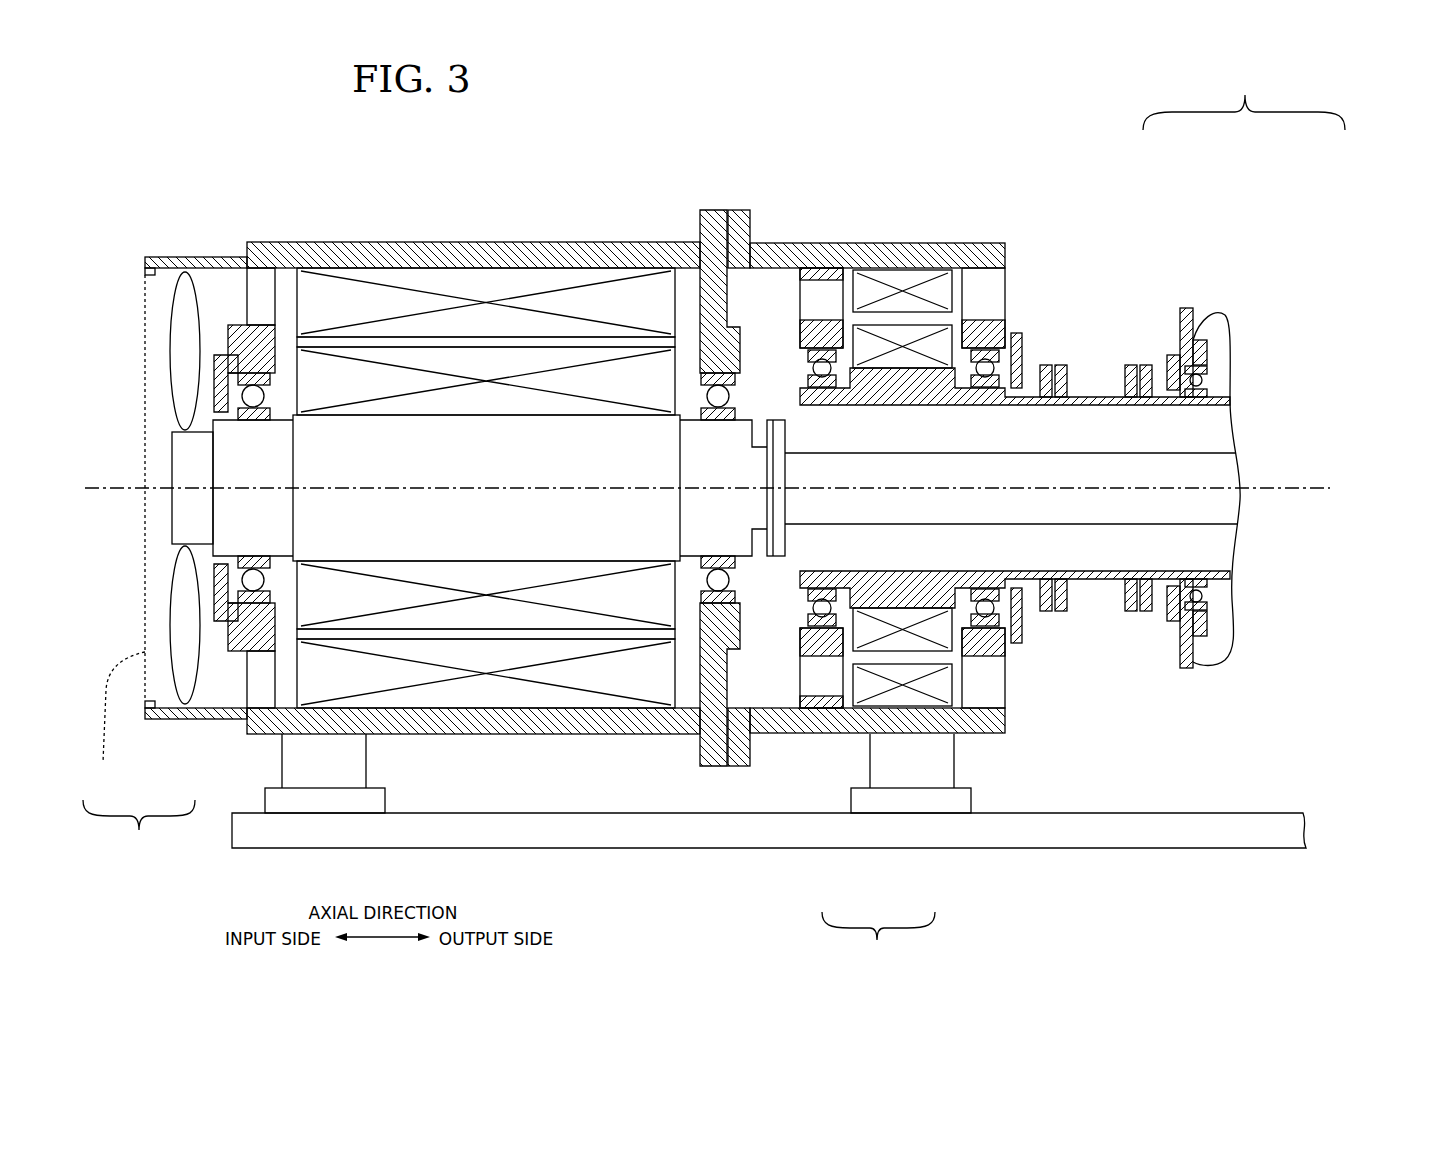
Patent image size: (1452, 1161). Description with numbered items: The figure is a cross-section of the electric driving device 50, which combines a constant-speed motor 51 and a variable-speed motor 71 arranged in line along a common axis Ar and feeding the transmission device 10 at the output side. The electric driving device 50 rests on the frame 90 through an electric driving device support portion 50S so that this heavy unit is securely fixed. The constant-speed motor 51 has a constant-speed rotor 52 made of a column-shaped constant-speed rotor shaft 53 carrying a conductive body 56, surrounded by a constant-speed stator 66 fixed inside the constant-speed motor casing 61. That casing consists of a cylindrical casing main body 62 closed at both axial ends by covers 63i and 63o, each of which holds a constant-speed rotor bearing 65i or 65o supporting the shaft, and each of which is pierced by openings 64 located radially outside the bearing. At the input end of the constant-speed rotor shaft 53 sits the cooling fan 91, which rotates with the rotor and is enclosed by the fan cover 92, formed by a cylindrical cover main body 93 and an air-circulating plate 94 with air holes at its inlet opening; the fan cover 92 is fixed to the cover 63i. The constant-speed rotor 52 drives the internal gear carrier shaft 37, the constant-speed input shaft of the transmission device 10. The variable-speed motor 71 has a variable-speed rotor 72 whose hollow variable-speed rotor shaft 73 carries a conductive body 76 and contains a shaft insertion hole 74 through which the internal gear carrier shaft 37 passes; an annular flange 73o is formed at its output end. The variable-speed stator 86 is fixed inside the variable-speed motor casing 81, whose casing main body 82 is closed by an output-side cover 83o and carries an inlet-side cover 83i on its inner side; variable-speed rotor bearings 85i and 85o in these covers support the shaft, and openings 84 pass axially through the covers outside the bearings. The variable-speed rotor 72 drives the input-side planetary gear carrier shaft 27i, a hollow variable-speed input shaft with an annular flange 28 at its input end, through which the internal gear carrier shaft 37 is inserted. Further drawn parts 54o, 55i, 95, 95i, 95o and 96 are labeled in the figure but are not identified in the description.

The transmission device 10 is at (1257, 617).
The input-side planetary gear carrier shaft 27i is at (1232, 358).
The annular flange 28 is at (1200, 312).
The internal gear carrier shaft 37 is at (1213, 513).
The electric driving device 50 is at (259, 230).
The electric driving device support portion 50S is at (310, 773).
The constant-speed motor 51 is at (276, 198).
The constant-speed rotor 52 is at (430, 640).
The constant-speed rotor shaft 53 is at (587, 536).
The output side rotor end plate 54o is at (782, 420).
The input side shaft portion 55i is at (771, 420).
The conductive body 56 is at (500, 607).
The constant-speed motor casing 61 is at (517, 233).
The casing main body 62 is at (562, 262).
The cover 63i is at (268, 262).
The cover 63o is at (710, 225).
The openings 64 is at (222, 290).
The constant-speed rotor bearing 65i is at (262, 396).
The constant-speed rotor bearing 65o is at (714, 392).
The constant-speed stator 66 is at (458, 287).
The variable-speed motor 71 is at (991, 232).
The variable-speed rotor 72 is at (878, 942).
The variable-speed rotor shaft 73 is at (872, 592).
The annular flange 73o is at (1043, 367).
The shaft insertion hole 74 is at (833, 569).
The conductive body 76 is at (913, 642).
The variable-speed motor casing 81 is at (893, 232).
The casing main body 82 is at (918, 253).
The inlet-side cover 83i is at (815, 275).
The output-side cover 83o is at (975, 253).
The openings 84 is at (822, 360).
The variable-speed rotor bearing 85i is at (800, 335).
The variable-speed rotor bearing 85o is at (1018, 336).
The variable-speed stator 86 is at (941, 290).
The frame 90 is at (1073, 848).
The cooling fan 91 is at (187, 283).
The fan cover 92 is at (139, 834).
The cover main body 93 is at (168, 720).
The air-circulating plate 94 is at (114, 538).
The seal unit 95 is at (1244, 95).
The inner seal 95i is at (1062, 366).
The outer seal 95o is at (1130, 366).
The seal spacer 96 is at (1110, 395).
The axis Ar is at (1320, 470).